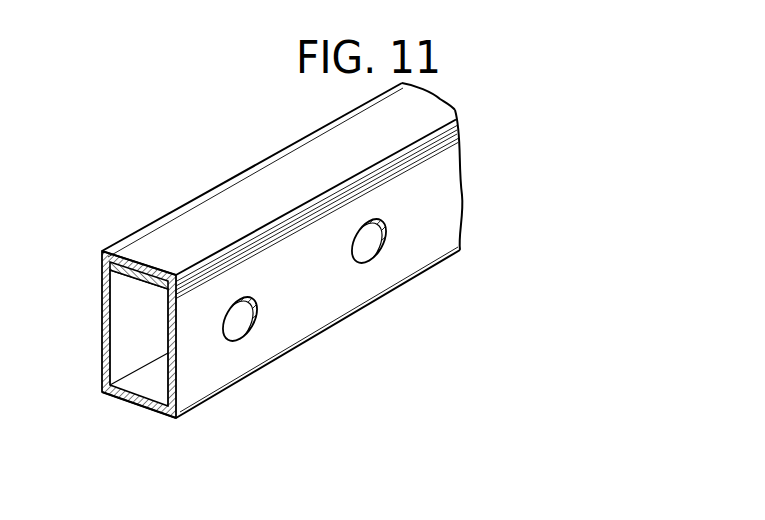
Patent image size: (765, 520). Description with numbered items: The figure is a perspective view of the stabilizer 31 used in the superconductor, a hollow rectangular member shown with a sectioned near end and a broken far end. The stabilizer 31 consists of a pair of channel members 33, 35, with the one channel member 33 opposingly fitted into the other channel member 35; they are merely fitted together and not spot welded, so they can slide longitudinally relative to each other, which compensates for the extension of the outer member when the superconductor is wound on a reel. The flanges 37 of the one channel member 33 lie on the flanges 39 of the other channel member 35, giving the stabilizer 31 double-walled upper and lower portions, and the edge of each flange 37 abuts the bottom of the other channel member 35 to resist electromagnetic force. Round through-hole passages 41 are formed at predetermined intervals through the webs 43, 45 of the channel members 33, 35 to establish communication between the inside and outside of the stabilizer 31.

The stabilizer 31 is at (92, 303).
The channel member 33 is at (204, 362).
The channel member 35 is at (101, 343).
The flanges 37 is at (129, 265).
The flanges 39 is at (148, 267).
The passages 41 is at (262, 331).
The web 43 is at (318, 313).
The web 45 is at (102, 303).